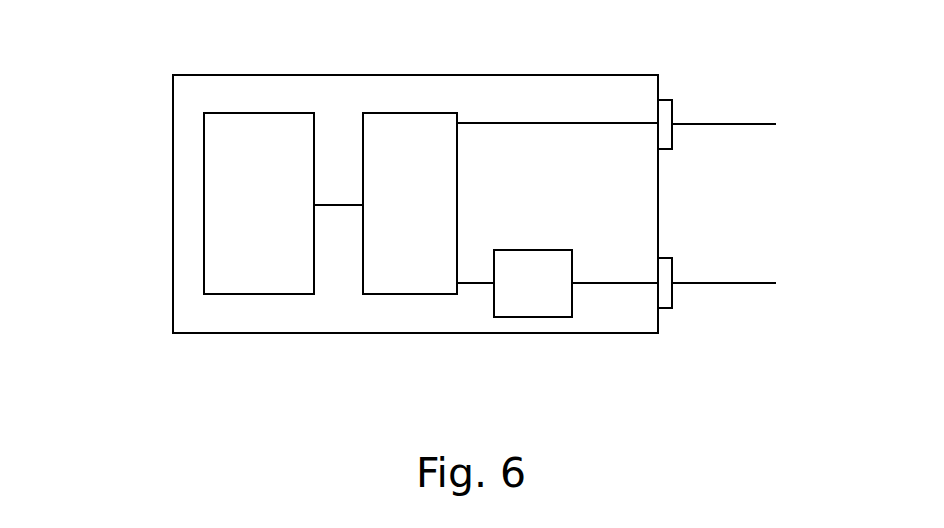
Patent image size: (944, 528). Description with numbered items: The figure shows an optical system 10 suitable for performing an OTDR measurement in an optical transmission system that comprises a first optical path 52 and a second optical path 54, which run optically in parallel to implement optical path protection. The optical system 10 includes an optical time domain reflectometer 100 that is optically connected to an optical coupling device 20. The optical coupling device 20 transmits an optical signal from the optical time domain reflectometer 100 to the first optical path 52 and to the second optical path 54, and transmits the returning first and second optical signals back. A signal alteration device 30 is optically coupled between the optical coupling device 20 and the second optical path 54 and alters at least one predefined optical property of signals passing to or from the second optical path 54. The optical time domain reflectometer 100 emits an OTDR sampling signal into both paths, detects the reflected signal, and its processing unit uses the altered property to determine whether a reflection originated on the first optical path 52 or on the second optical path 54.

The optical system 10 is at (146, 193).
The optical time domain reflectometer 100 is at (258, 113).
The optical coupling device 20 is at (407, 113).
The signal alteration device 30 is at (534, 318).
The first optical path 52 is at (743, 124).
The second optical path 54 is at (743, 284).